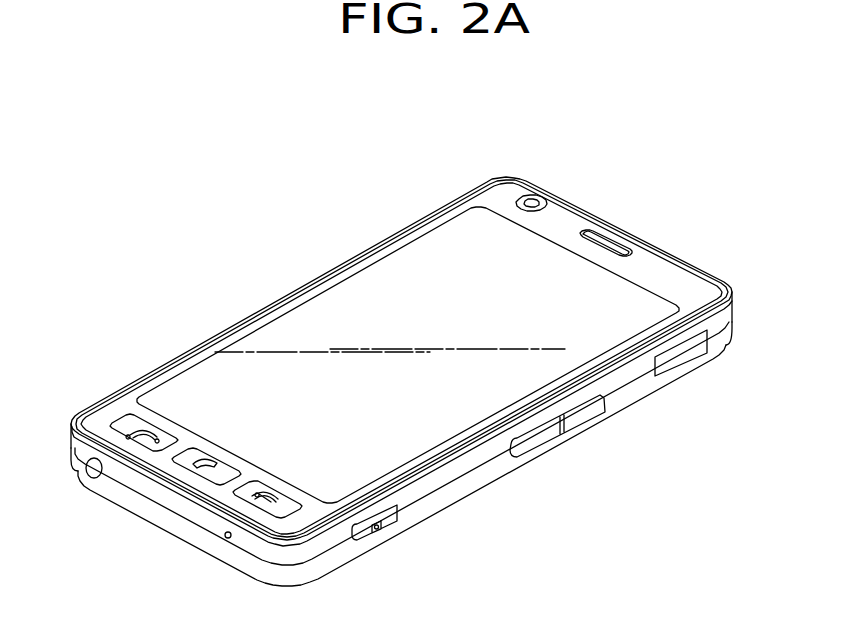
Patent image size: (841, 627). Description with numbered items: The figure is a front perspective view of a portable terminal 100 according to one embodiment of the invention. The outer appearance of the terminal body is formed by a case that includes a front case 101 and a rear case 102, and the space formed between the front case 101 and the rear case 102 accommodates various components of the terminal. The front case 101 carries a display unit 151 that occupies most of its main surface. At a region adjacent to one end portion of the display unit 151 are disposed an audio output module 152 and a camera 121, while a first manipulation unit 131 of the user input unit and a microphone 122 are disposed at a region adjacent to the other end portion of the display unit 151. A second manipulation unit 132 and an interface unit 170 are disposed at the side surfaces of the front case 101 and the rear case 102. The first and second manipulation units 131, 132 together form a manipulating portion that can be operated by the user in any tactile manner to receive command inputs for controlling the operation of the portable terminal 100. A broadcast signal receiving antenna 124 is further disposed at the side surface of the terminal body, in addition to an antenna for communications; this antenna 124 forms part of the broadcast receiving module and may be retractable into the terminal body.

The portable terminal 100 is at (348, 211).
The front case 101 is at (724, 318).
The rear case 102 is at (727, 339).
The camera 121 is at (538, 199).
The microphone 122 is at (227, 538).
The broadcast signal receiving antenna 124 is at (88, 472).
The first manipulation unit 131 is at (122, 423).
The second manipulation unit 132 is at (540, 444).
The display unit 151 is at (330, 294).
The audio output module 152 is at (613, 243).
The interface unit 170 is at (682, 355).